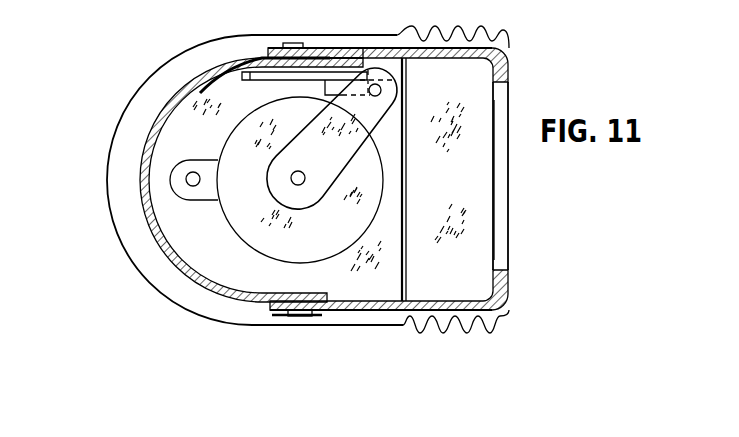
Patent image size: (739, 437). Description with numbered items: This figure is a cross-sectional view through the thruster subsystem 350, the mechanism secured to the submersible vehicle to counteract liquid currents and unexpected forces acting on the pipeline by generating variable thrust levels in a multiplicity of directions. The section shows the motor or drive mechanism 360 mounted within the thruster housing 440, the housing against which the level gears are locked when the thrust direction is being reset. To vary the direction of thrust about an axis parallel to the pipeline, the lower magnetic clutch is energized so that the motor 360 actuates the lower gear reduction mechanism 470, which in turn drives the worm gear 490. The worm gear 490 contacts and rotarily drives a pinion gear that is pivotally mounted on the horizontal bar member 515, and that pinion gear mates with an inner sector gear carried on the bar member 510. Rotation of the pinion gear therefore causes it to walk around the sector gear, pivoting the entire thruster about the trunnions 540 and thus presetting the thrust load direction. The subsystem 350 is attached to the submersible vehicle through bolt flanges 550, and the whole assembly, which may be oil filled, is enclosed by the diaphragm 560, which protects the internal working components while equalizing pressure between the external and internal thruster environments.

The thruster subsystem 350 is at (560, 200).
The motor or drive mechanism 360 is at (262, 180).
The thruster housing 440 is at (107, 158).
The lower gear reduction mechanism 470 is at (380, 122).
The worm gear 490 is at (396, 96).
The bar member 510 is at (386, 44).
The horizontal bar member 515 is at (170, 112).
The trunnions 540 is at (300, 316).
The bolt flanges 550 is at (508, 250).
The diaphragm 560 is at (483, 37).